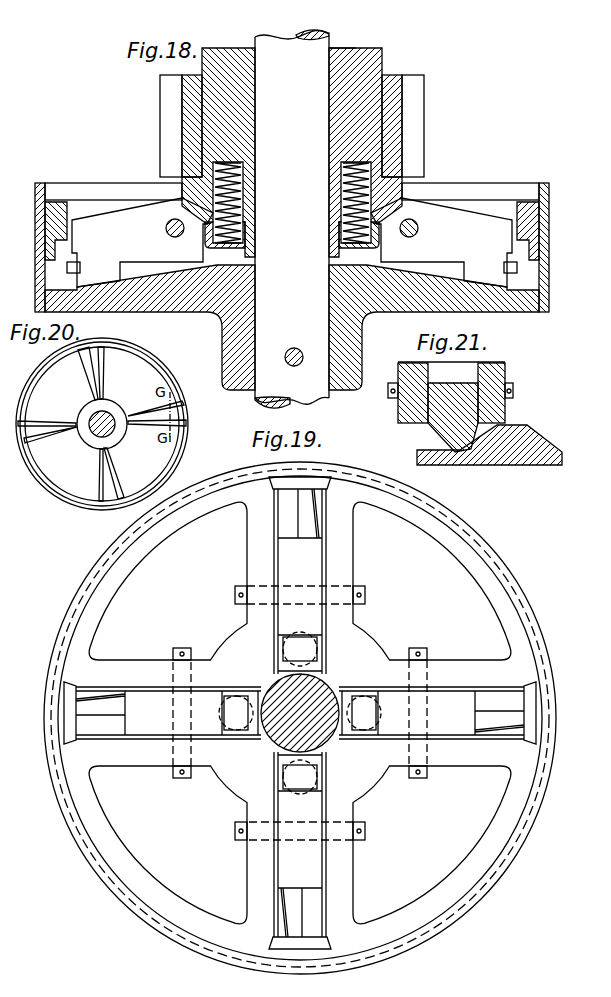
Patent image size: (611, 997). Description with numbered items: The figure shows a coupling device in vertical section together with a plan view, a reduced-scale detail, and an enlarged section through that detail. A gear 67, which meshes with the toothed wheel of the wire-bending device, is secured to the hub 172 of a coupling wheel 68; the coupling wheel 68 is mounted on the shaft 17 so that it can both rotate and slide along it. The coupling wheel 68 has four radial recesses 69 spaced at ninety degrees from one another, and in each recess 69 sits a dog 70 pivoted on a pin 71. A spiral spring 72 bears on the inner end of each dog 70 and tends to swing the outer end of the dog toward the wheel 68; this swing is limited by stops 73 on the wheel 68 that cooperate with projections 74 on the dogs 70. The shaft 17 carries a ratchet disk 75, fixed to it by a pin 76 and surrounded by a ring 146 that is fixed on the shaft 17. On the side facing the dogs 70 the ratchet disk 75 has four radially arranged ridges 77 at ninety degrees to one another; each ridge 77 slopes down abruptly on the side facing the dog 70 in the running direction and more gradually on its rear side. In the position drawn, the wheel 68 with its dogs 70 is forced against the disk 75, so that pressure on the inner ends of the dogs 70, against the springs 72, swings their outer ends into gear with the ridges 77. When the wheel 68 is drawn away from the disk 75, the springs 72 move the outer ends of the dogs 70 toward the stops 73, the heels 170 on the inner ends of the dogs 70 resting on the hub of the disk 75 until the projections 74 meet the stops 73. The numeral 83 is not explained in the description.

In FIG. 18, the shaft 17 is at (317, 382).
In FIG. 19, the shaft 17 is at (310, 727).
In FIG. 20, the shaft 17 is at (100, 425).
In FIG. 18, the gear 67 is at (390, 88).
In FIG. 18, the coupling wheel 68 is at (545, 212).
In FIG. 19, the coupling wheel 68 is at (465, 673).
In FIG. 21, the coupling wheel 68 is at (500, 363).
In FIG. 19, the radial recesses 69 is at (341, 692).
In FIG. 18, the dog 70 is at (457, 227).
In FIG. 19, the dog 70 is at (298, 568).
In FIG. 21, the dog 70 is at (452, 418).
In FIG. 18, the pin 71 is at (168, 222).
In FIG. 19, the pin 71 is at (190, 657).
In FIG. 21, the pin 71 is at (390, 385).
In FIG. 18, the spiral spring 72 is at (373, 163).
In FIG. 18, the stops 73 is at (518, 215).
In FIG. 19, the stops 73 is at (527, 715).
In FIG. 18, the projections 74 is at (72, 268).
In FIG. 18, the ratchet disk 75 is at (483, 300).
In FIG. 18, the pin 76 is at (287, 363).
In FIG. 20, the ridges 77 is at (90, 367).
In FIG. 21, the ridges 77 is at (512, 436).
In FIG. 18, the hub top face 83 is at (348, 48).
In FIG. 18, the ring 146 is at (37, 197).
In FIG. 18, the heels 170 is at (230, 257).
In FIG. 18, the hub 172 is at (363, 62).